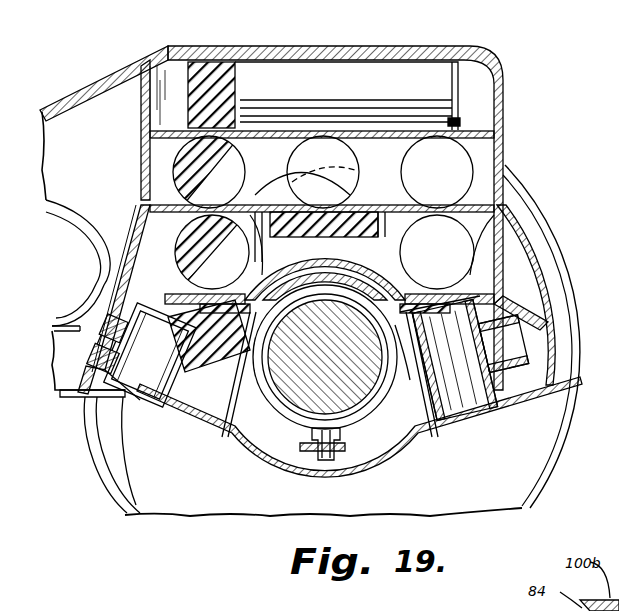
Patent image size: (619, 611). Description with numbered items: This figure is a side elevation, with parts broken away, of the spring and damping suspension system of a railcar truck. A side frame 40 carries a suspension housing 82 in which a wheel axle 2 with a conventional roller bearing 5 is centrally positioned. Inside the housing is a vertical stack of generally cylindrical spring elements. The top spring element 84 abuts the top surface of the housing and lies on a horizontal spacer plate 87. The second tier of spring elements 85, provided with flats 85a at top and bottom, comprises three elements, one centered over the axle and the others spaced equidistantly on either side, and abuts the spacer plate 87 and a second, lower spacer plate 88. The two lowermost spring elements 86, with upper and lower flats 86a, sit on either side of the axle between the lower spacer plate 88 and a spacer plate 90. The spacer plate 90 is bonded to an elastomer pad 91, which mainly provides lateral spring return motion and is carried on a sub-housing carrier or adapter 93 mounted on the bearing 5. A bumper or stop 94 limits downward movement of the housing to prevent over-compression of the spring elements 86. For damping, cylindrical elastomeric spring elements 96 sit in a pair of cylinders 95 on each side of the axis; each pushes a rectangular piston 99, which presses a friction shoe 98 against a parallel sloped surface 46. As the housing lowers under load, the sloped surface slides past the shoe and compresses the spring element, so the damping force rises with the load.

The wheel axle 2 is at (345, 398).
The roller bearing 5 is at (262, 455).
The side frame 40 is at (505, 58).
The sloped surface 46 is at (522, 186).
The suspension housing 82 is at (508, 160).
The top spring element 84 is at (335, 75).
The second tier spring elements 85 is at (494, 206).
The flats 85a is at (445, 118).
The lowermost spring elements 86 is at (265, 262).
The flats 86a is at (470, 284).
The horizontal spacer plate 87 is at (420, 128).
The lower spacer plate 88 is at (470, 262).
The spacer plate 90 is at (496, 296).
The elastomer pad 91 is at (514, 316).
The sub-housing carrier or adapter 93 is at (452, 418).
The bumper or stop 94 is at (362, 225).
The cylinders 95 is at (160, 405).
The cylindrical elastomeric spring element 96 is at (197, 400).
The friction shoe 98 is at (72, 400).
The rectangular piston 99 is at (105, 465).